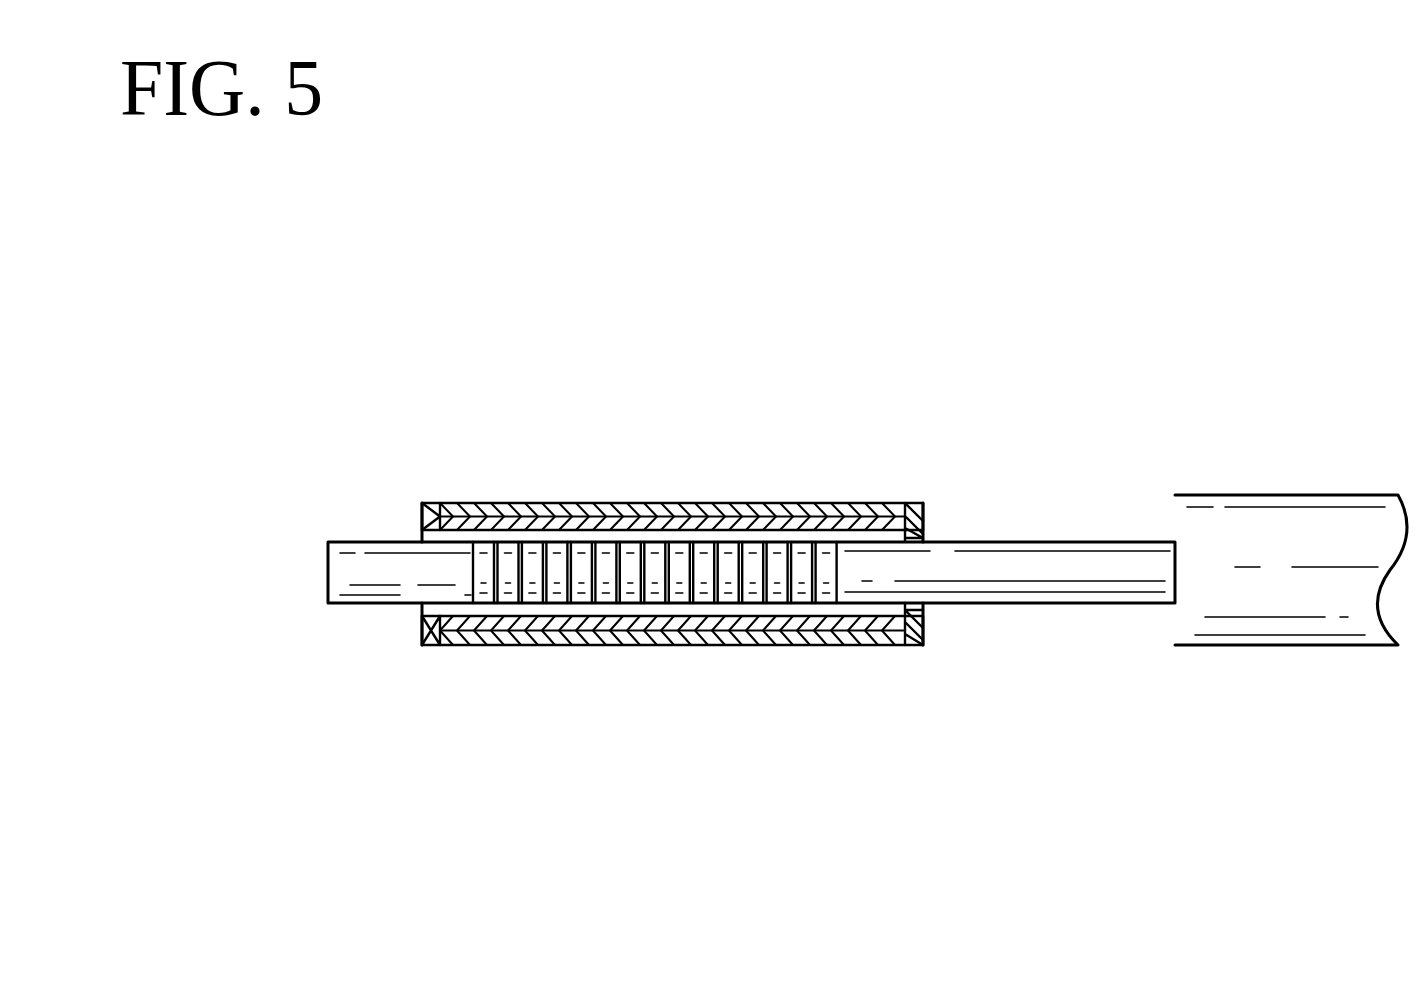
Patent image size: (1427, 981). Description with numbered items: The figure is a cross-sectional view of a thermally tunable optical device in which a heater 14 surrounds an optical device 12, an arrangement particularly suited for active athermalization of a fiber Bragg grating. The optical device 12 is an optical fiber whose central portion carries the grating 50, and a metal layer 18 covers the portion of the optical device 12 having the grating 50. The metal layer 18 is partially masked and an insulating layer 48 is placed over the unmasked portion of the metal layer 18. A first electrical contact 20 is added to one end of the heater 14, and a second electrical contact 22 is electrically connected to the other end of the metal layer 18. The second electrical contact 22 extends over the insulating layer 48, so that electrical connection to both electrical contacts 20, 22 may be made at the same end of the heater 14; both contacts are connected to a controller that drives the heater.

The optical device 12 is at (1117, 542).
The heater 14 is at (683, 593).
The metal layer 18 is at (427, 645).
The first electrical contact 20 is at (923, 520).
The second electrical contact 22 is at (438, 503).
The insulating layer 48 is at (845, 525).
The grating 50 is at (850, 470).